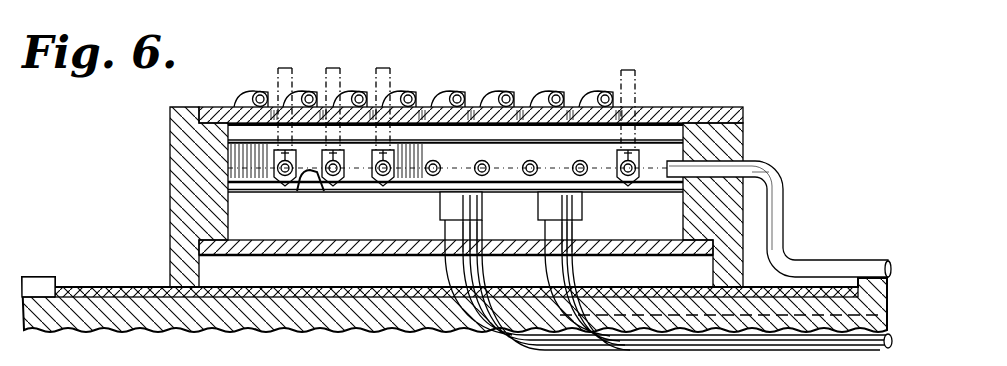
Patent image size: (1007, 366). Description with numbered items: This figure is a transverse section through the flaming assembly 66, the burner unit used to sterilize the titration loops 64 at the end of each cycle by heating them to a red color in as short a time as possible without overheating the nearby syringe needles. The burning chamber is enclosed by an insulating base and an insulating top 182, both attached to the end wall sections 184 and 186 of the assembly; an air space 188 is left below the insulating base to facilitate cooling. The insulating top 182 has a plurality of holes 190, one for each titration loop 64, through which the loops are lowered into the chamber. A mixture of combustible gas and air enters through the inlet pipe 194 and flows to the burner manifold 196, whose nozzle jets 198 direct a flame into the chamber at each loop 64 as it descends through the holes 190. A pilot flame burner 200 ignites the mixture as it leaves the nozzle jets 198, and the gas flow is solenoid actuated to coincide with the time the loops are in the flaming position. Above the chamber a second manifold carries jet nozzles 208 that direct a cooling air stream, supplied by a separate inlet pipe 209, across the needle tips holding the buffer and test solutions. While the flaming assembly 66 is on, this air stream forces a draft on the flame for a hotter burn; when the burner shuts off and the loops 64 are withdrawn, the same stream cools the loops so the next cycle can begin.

The titration loops 64 is at (378, 68).
The flaming assembly 66 is at (766, 104).
The insulating top 182 is at (214, 107).
The end wall section 184 is at (744, 127).
The end wall section 186 is at (172, 171).
The air space 188 is at (199, 270).
The holes 190 is at (585, 92).
The inlet pipe 194 is at (580, 204).
The burner manifold 196 is at (310, 191).
The nozzle jets 198 is at (516, 198).
The pilot flame burner 200 is at (784, 194).
The jet nozzles 208 is at (454, 92).
The inlet pipe 209 is at (445, 228).